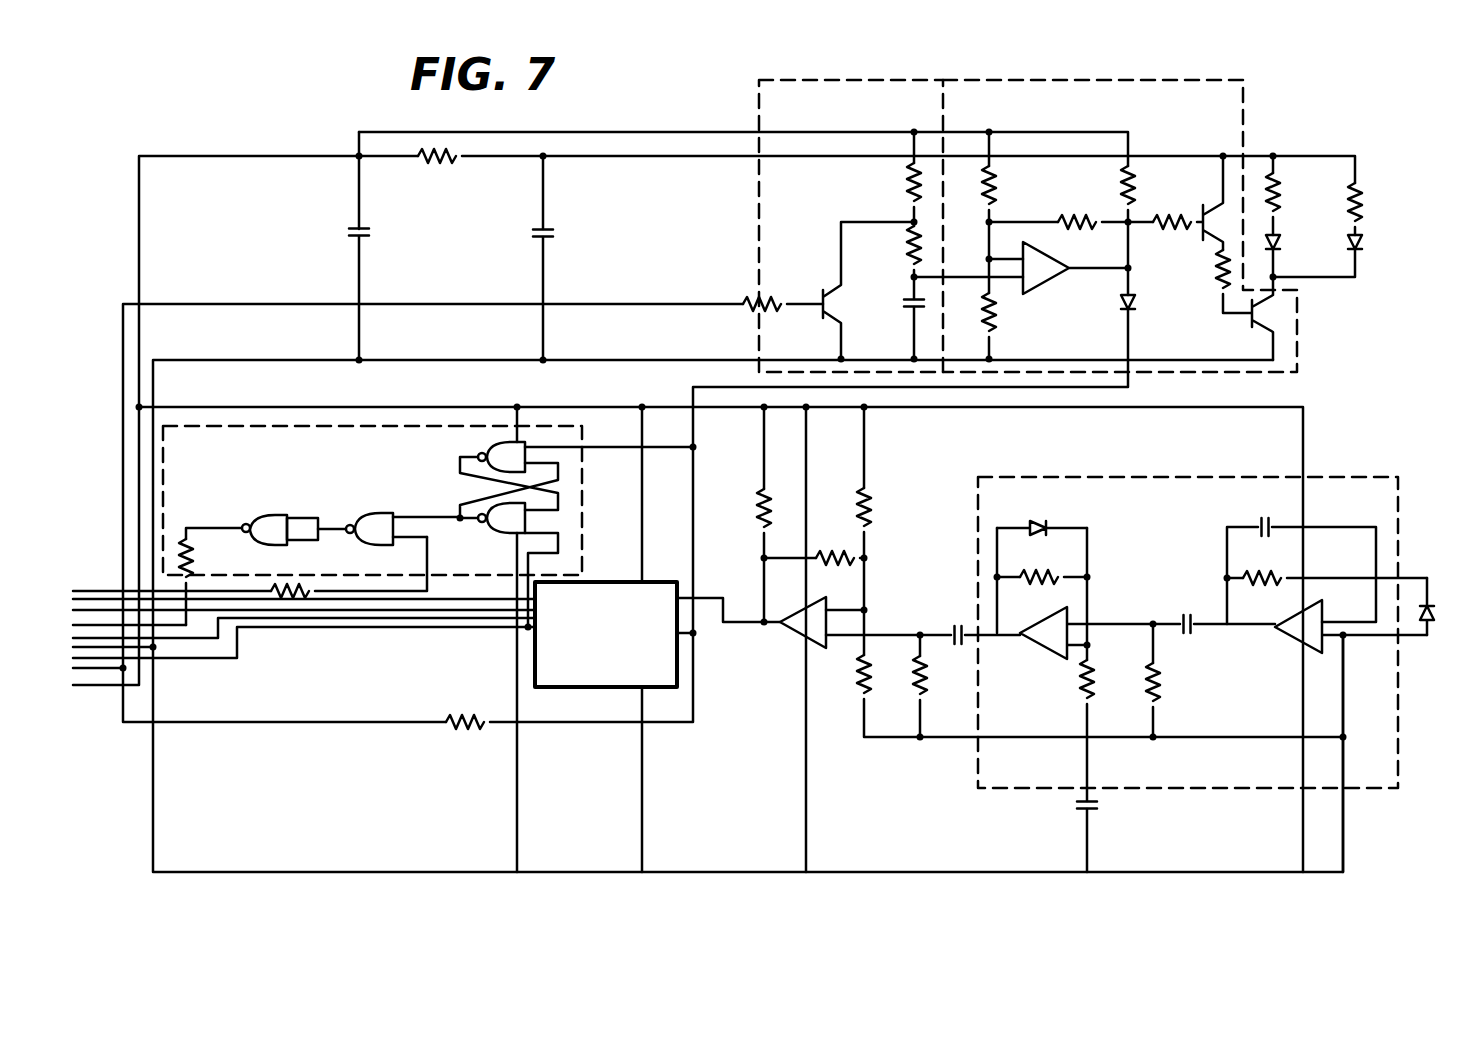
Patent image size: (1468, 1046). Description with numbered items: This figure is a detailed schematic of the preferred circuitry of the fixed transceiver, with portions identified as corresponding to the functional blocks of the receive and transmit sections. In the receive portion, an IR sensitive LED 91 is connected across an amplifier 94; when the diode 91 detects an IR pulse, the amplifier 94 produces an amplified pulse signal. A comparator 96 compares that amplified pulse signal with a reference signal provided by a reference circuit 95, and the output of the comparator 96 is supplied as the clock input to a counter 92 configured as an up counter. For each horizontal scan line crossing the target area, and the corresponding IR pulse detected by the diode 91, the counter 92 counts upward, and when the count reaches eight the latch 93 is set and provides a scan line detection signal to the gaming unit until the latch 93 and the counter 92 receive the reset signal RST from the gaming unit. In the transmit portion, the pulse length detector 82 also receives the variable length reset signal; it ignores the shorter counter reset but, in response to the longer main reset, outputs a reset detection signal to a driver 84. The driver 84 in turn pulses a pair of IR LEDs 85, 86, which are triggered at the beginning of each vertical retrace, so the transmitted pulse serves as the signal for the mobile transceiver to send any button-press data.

The pulse length detector 82 is at (891, 226).
The driver 84 is at (1120, 226).
The IR LED 85 is at (1282, 240).
The IR LED 86 is at (1366, 238).
The IR sensitive LED 91 is at (1434, 618).
The counter 92 is at (599, 689).
The latch 93 is at (428, 528).
The amplifier 94 is at (1202, 674).
The reference circuit 95 is at (905, 592).
The comparator 96 is at (790, 632).